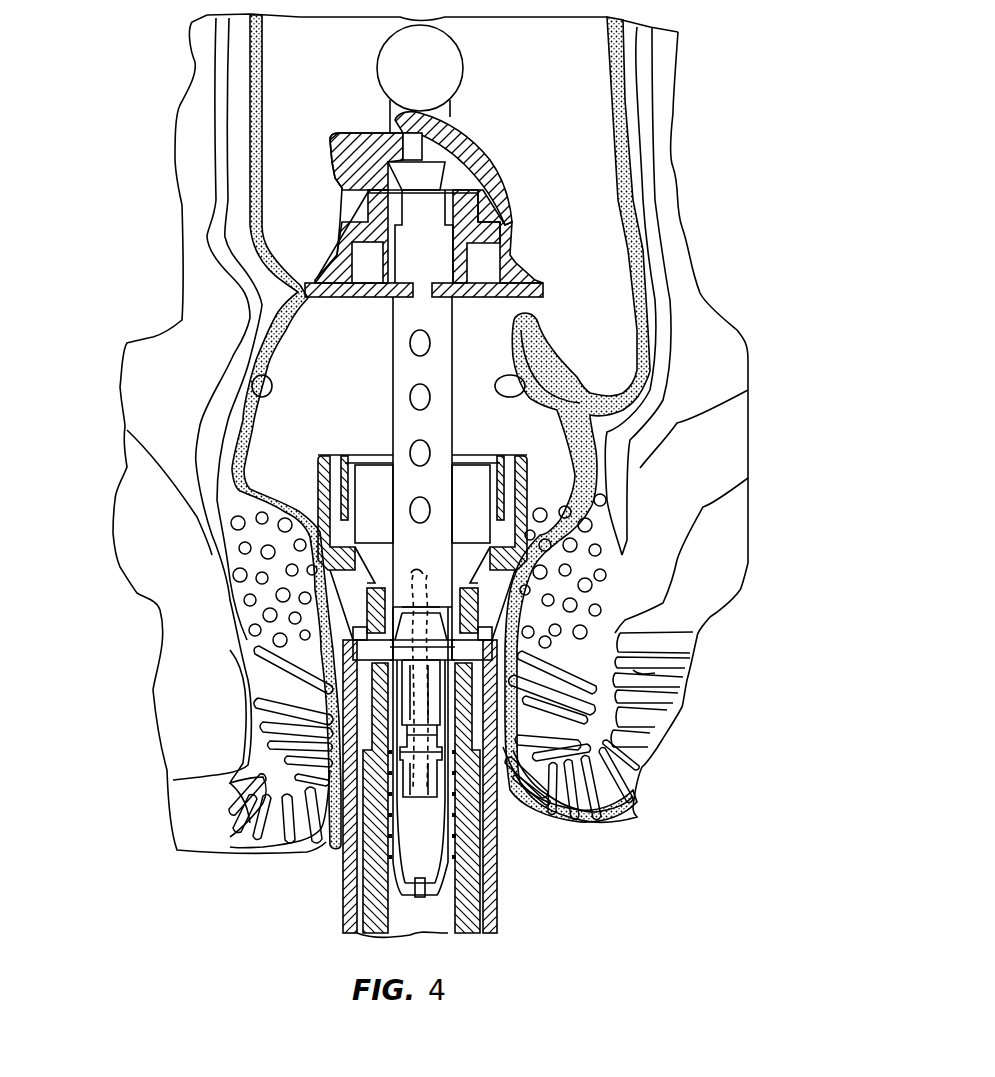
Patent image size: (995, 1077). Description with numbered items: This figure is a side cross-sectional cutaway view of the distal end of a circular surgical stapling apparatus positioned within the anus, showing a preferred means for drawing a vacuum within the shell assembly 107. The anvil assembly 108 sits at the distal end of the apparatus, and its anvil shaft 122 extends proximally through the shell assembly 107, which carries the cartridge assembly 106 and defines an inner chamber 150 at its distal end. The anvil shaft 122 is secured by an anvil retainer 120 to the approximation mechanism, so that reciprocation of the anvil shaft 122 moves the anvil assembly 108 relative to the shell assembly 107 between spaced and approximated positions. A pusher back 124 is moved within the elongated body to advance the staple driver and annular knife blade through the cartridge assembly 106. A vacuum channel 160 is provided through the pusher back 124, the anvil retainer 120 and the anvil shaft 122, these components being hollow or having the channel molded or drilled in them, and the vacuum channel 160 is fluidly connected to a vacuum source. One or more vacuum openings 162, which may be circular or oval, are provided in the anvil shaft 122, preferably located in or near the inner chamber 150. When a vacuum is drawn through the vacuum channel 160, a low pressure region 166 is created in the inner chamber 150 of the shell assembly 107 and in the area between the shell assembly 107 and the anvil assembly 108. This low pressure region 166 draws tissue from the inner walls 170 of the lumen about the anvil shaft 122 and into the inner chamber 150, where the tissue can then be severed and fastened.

The anvil assembly 108 is at (500, 167).
The inner walls of the lumen 170 is at (262, 378).
The vacuum openings 162 is at (415, 347).
The anvil shaft 122 is at (393, 417).
The low pressure region 166 is at (535, 462).
The cartridge assembly 106 is at (475, 467).
The shell assembly 107 is at (530, 497).
The inner chamber 150 is at (383, 520).
The vacuum channel 160 is at (420, 702).
The anvil retainer 120 is at (438, 858).
The pusher back 124 is at (463, 893).